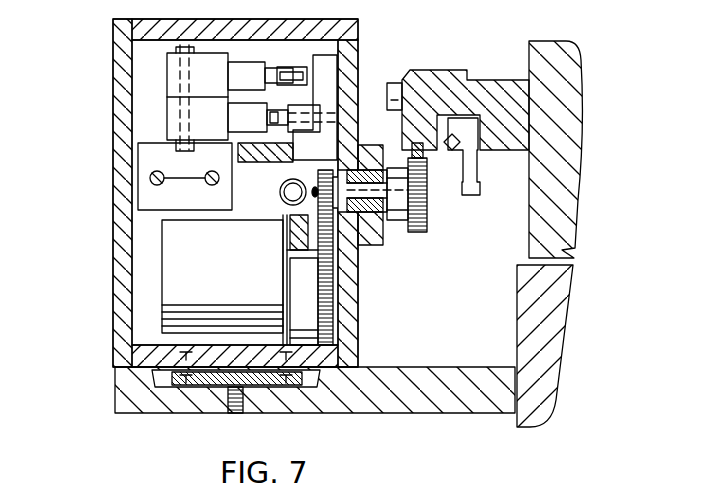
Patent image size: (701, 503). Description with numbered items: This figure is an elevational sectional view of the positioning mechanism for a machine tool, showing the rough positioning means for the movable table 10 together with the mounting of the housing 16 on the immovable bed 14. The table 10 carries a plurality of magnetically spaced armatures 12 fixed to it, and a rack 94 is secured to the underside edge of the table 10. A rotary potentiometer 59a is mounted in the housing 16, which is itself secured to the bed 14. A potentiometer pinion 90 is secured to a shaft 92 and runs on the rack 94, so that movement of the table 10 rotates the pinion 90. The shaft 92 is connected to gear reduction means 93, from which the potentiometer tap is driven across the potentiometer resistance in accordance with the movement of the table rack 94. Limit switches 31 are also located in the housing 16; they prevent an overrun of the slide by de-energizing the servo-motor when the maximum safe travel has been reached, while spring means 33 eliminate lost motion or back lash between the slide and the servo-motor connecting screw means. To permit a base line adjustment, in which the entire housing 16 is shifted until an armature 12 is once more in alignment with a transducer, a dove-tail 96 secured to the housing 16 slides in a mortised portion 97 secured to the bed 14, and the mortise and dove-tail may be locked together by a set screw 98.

The table 10 is at (533, 49).
The armature 12 is at (466, 126).
The bed 14 is at (520, 310).
The housing 16 is at (108, 150).
The limit switch 31 is at (172, 113).
The spring means 33 is at (280, 191).
The rotary potentiometer 59a is at (162, 268).
The potentiometer pinion 90 is at (421, 234).
The shaft 92 is at (382, 146).
The gear reduction means 93 is at (345, 262).
The rack 94 is at (421, 153).
The dove-tail 96 is at (170, 383).
The mortised portion 97 is at (422, 402).
The set screw 98 is at (245, 403).